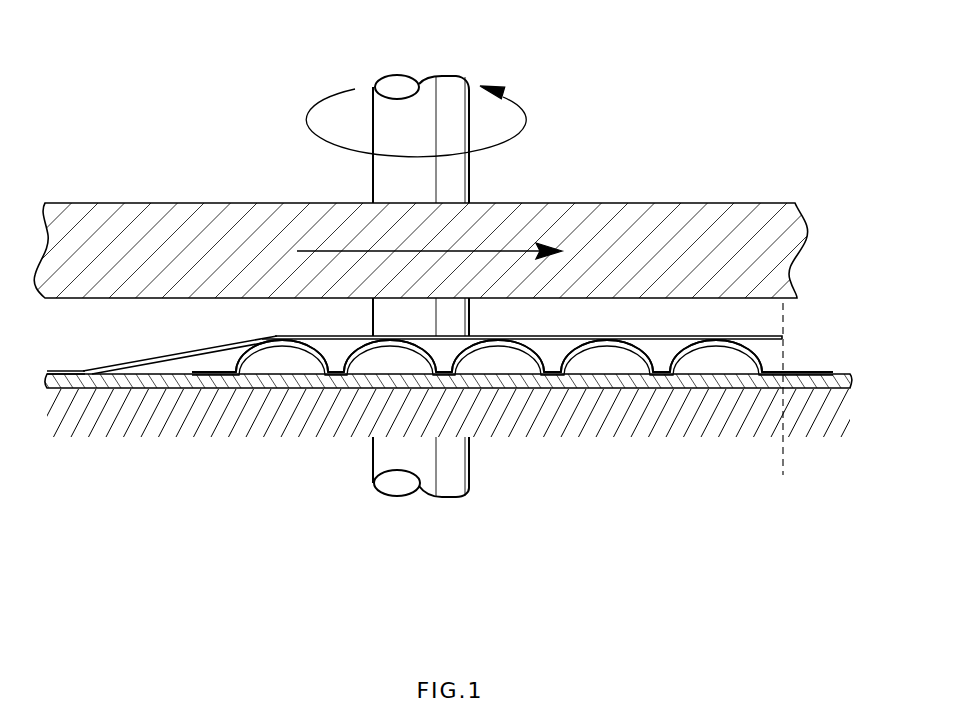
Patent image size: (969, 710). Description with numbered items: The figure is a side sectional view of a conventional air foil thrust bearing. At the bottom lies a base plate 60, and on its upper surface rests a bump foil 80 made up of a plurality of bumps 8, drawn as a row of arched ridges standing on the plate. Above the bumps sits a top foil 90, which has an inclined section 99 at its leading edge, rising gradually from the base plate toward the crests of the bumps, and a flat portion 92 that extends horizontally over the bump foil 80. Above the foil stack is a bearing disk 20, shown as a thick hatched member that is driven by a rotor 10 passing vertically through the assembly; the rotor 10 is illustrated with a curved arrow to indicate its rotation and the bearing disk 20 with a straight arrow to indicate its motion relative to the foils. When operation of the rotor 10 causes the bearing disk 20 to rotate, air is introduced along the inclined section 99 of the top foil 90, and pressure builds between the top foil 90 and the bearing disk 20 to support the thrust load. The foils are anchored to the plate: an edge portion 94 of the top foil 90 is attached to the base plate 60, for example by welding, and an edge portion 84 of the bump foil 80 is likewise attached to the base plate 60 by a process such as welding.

The rotor 10 is at (394, 82).
The bearing disk 20 is at (788, 220).
The bumps 8 is at (282, 338).
The base plate 60 is at (660, 388).
The bump foil 80 is at (523, 337).
The edge portion of bump foil 84 is at (822, 374).
The top foil 90 is at (783, 334).
The flat portion 92 is at (556, 338).
The edge portion of top foil 94 is at (65, 368).
The inclined section 99 is at (163, 355).